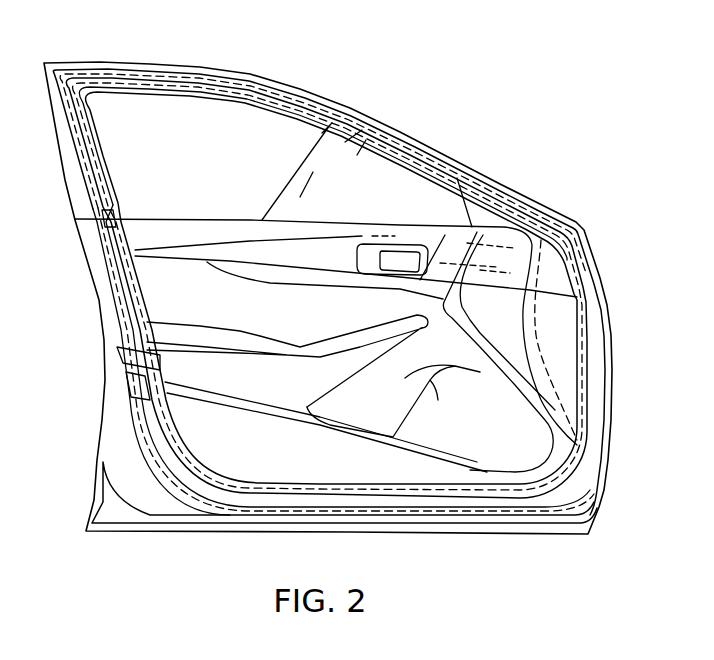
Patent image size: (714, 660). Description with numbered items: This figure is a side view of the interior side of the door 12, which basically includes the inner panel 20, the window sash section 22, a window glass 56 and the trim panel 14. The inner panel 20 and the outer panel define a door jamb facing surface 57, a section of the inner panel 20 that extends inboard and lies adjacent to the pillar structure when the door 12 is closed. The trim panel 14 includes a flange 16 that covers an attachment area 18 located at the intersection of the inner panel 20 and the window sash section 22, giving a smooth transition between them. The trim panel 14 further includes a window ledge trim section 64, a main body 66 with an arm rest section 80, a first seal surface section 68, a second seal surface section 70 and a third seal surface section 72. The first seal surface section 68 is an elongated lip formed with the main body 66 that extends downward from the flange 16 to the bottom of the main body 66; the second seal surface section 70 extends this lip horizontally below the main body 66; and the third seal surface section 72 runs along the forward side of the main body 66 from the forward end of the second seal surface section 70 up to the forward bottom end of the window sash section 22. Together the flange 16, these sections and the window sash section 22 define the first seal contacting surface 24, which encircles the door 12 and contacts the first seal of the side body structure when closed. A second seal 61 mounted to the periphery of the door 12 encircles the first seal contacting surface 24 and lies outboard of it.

The door 12 is at (522, 125).
The trim panel 14 is at (453, 497).
The flange 16 is at (112, 213).
The attachment area 18 is at (100, 213).
The inner panel 20 is at (135, 473).
The window sash section 22 is at (288, 97).
The first seal contacting surface 24 is at (82, 128).
The window glass 56 is at (395, 178).
The door jamb facing surface 57 is at (128, 325).
The second seal 61 is at (213, 75).
The window ledge trim section 64 is at (217, 230).
The main body 66 is at (180, 277).
The first seal surface section 68 is at (116, 348).
The second seal surface section 70 is at (283, 490).
The third seal surface section 72 is at (541, 363).
The arm rest section 80 is at (272, 378).